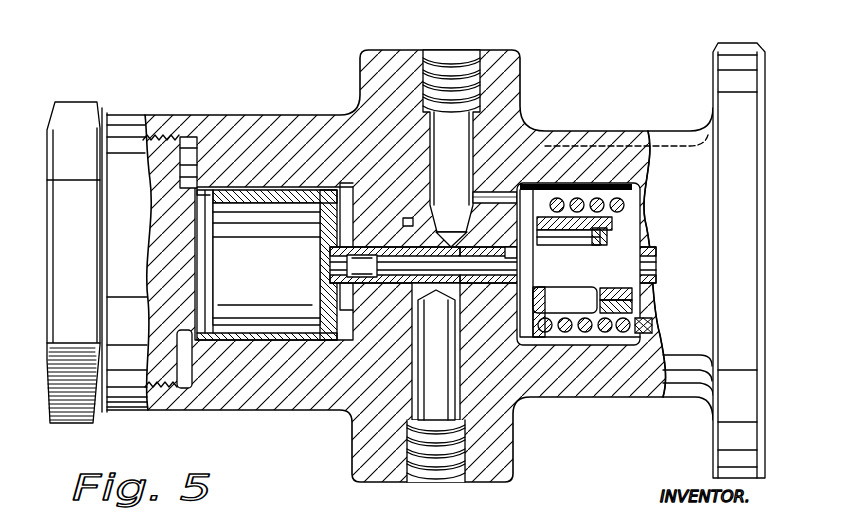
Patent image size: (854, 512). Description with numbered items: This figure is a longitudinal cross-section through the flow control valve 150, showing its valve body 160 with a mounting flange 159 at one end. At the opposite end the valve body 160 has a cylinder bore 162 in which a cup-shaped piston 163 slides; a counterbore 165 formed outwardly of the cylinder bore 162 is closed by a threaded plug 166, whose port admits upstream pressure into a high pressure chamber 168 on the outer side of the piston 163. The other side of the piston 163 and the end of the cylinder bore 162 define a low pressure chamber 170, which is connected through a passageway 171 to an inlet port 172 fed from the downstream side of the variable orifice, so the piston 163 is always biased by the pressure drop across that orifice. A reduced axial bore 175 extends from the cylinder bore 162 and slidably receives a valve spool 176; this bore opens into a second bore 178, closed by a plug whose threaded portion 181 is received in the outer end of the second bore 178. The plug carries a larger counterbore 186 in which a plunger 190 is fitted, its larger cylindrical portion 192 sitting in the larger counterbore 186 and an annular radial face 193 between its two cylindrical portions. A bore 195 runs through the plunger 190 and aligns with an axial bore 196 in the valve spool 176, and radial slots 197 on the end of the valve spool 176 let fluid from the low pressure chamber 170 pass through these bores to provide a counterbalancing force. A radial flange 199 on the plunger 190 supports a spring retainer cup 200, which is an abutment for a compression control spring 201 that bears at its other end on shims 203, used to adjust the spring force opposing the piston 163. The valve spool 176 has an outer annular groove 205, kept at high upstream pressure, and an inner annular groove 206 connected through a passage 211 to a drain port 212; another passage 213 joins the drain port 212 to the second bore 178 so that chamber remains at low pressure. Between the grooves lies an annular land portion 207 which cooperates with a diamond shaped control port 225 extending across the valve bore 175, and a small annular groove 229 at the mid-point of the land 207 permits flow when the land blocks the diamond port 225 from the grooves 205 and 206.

The flow control valve 150 is at (213, 108).
The mounting flange 159 is at (723, 72).
The valve body 160 is at (296, 127).
The cylinder bore 162 is at (263, 334).
The cup-shaped piston 163 is at (319, 233).
The counterbore 165 is at (188, 396).
The threaded plug 166 is at (74, 117).
The high pressure chamber 168 is at (262, 276).
The low pressure chamber 170 is at (266, 265).
The passageway 171 is at (373, 322).
The inlet port 172 is at (430, 483).
The reduced axial bore 175 is at (392, 250).
The valve spool 176 is at (502, 284).
The second bore 178 is at (636, 189).
The threaded portion 181 is at (662, 353).
The larger counterbore 186 is at (637, 248).
The plunger 190 is at (641, 258).
The larger cylindrical portion 192 is at (650, 307).
The annular radial face 193 is at (651, 292).
The bore 195 is at (645, 264).
The axial bore 196 is at (512, 256).
The radial slots 197 is at (330, 262).
The radial flange 199 is at (590, 293).
The spring retainer cup 200 is at (601, 333).
The compression control spring 201 is at (562, 333).
The shims 203 is at (655, 333).
The outer annular groove 205 is at (383, 284).
The inner annular groove 206 is at (453, 382).
The annular land portion 207 is at (405, 248).
The passage 211 is at (468, 207).
The drain port 212 is at (456, 62).
The passage 213 is at (497, 193).
The diamond shaped control port 225 is at (408, 217).
The small annular groove 229 is at (440, 298).